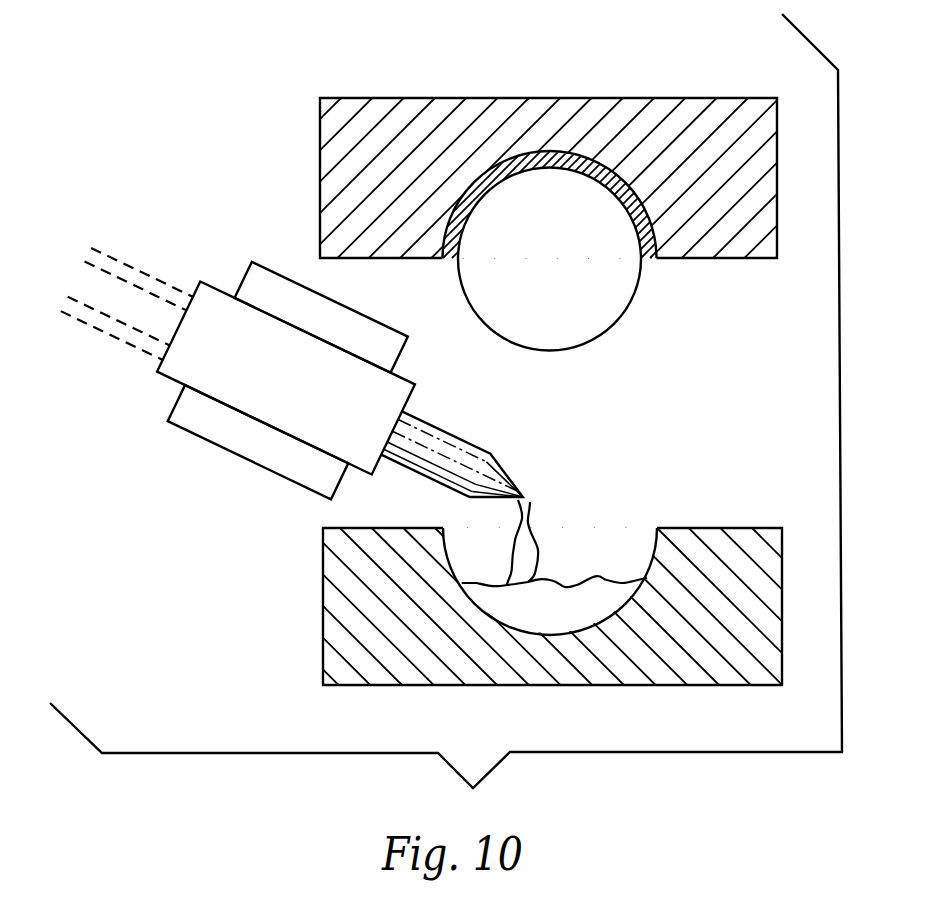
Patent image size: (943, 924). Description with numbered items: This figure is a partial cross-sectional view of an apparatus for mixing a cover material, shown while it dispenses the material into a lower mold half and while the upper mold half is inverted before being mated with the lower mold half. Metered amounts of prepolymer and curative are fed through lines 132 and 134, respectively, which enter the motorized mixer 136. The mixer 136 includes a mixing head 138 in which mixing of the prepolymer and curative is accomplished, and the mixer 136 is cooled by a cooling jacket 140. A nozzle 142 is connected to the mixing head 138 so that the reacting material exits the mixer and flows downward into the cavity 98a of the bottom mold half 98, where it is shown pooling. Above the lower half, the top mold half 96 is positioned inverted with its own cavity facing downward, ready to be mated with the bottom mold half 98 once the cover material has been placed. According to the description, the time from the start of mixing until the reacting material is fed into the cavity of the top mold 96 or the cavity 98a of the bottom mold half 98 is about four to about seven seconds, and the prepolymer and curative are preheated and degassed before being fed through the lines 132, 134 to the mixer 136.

The top mold half 96 is at (388, 113).
The bottom mold half 98 is at (337, 618).
The cavity 98a is at (655, 253).
The line 132 is at (100, 327).
The line 134 is at (125, 268).
The motorized mixer 136 is at (298, 387).
The mixing head 138 is at (310, 397).
The cooling jacket 140 is at (358, 328).
The nozzle 142 is at (437, 450).